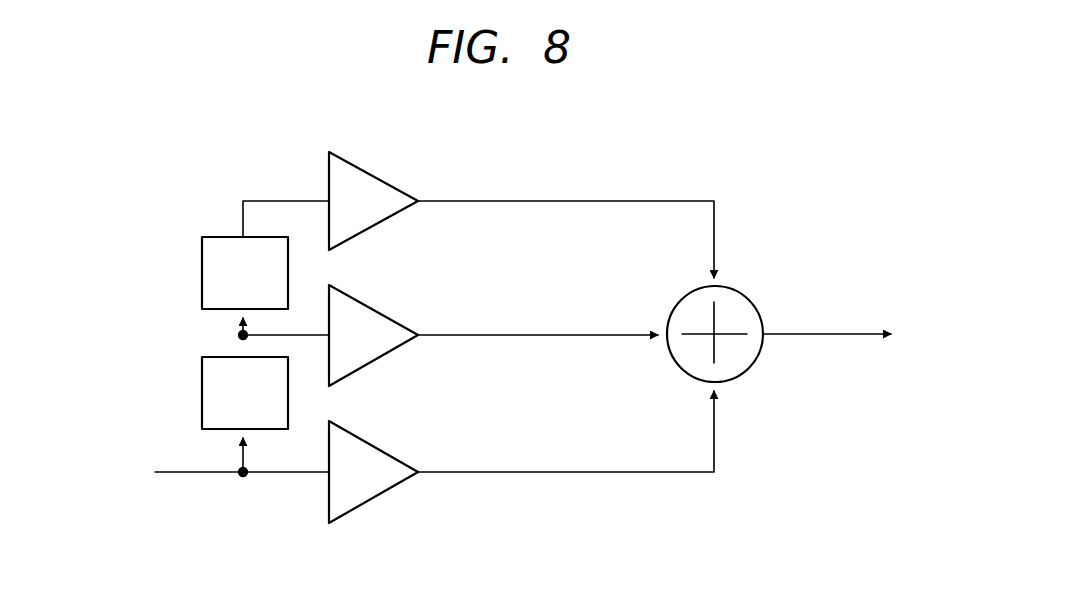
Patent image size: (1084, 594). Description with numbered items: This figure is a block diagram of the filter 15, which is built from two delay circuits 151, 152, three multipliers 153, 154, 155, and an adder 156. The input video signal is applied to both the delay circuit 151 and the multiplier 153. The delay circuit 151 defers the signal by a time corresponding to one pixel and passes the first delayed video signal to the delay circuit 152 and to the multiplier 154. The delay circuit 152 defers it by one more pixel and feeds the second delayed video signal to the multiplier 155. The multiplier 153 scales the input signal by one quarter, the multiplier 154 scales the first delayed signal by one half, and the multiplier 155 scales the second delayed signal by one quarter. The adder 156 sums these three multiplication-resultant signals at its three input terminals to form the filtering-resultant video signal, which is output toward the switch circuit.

The filter 15 is at (682, 170).
The delay circuit 151 is at (202, 378).
The delay circuit 152 is at (202, 262).
The multiplier 153 is at (362, 435).
The multiplier 154 is at (362, 302).
The multiplier 155 is at (362, 167).
The adder 156 is at (740, 292).